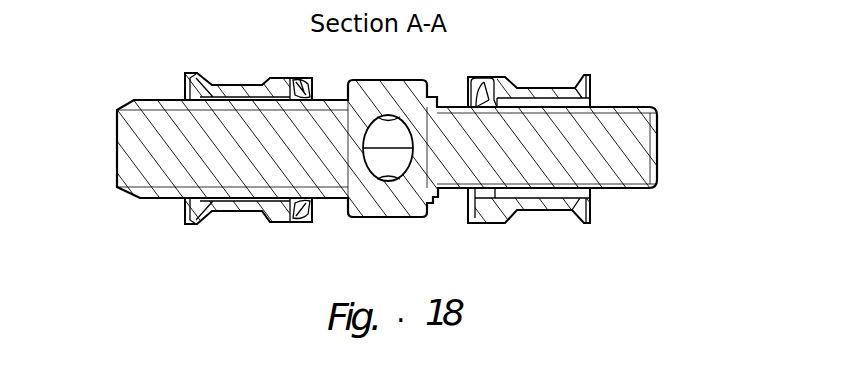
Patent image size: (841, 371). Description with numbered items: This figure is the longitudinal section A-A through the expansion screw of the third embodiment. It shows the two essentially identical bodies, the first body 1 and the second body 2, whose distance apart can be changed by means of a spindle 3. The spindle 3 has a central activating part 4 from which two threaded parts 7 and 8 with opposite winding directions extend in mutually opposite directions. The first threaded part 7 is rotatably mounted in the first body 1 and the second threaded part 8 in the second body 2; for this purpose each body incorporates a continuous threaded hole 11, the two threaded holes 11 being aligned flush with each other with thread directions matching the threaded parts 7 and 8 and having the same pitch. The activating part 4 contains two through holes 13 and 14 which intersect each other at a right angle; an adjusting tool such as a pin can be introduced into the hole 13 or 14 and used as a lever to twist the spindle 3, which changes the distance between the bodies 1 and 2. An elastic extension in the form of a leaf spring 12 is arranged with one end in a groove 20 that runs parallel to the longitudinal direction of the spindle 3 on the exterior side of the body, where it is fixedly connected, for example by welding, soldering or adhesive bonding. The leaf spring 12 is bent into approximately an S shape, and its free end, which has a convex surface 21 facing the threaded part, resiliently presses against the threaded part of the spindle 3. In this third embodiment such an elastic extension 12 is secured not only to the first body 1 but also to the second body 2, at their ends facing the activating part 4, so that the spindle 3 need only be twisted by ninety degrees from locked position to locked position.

The first body 1 is at (193, 88).
The second body 2 is at (583, 78).
The spindle 3 is at (622, 125).
The activating part 4 is at (368, 202).
The first threaded part 7 is at (142, 167).
The second threaded part 8 is at (651, 137).
The threaded hole 11 is at (229, 193).
The leaf spring 12 is at (309, 87).
The through hole 13 is at (387, 178).
The through hole 14 is at (392, 113).
The groove 20 is at (297, 72).
The convex surface 21 is at (284, 195).